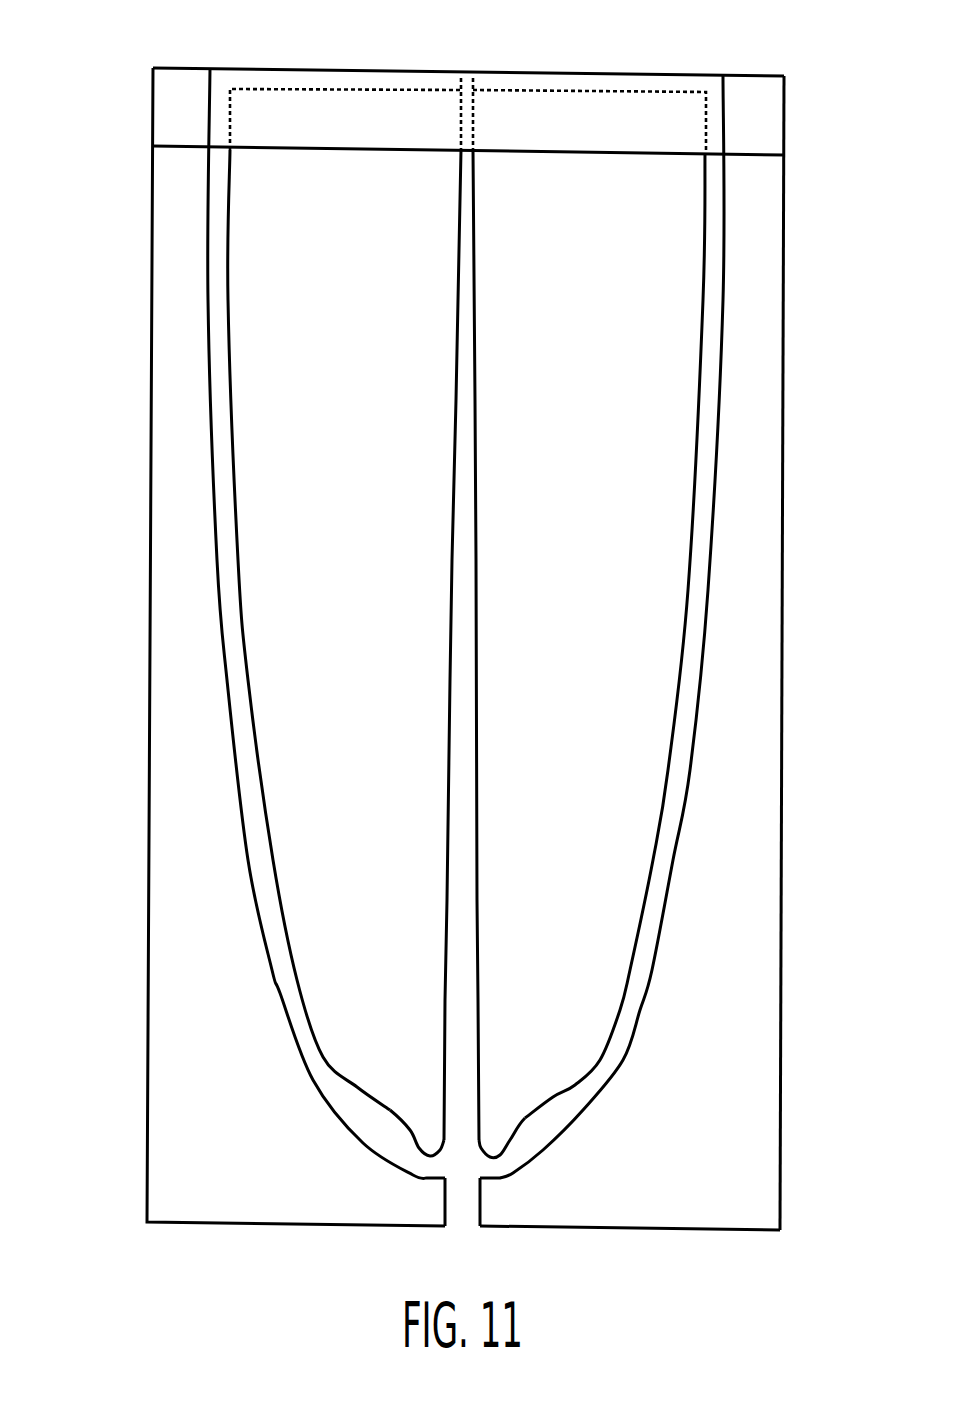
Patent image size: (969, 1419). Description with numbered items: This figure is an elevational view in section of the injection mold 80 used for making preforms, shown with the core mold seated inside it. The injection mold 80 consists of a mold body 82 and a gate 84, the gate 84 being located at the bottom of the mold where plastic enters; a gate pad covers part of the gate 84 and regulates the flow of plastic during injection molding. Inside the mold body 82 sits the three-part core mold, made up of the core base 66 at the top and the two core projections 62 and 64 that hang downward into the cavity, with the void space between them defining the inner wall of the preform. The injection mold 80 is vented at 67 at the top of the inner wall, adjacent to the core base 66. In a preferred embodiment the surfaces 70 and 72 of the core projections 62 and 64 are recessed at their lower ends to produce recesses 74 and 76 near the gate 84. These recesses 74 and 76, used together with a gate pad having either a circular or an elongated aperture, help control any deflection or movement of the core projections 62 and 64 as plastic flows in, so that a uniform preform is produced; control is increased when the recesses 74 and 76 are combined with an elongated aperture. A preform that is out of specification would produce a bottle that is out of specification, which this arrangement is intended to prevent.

The core projection 62 is at (265, 642).
The core projection 64 is at (640, 612).
The core base 66 is at (558, 78).
The vent 67 is at (467, 75).
The surface 70 is at (440, 938).
The surface 72 is at (479, 923).
The recess 74 is at (392, 1112).
The recess 76 is at (528, 1117).
The injection mold 80 is at (721, 289).
The mold body 82 is at (743, 738).
The gate 84 is at (462, 1208).